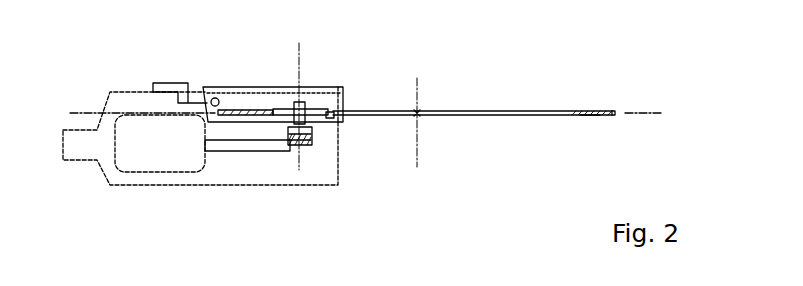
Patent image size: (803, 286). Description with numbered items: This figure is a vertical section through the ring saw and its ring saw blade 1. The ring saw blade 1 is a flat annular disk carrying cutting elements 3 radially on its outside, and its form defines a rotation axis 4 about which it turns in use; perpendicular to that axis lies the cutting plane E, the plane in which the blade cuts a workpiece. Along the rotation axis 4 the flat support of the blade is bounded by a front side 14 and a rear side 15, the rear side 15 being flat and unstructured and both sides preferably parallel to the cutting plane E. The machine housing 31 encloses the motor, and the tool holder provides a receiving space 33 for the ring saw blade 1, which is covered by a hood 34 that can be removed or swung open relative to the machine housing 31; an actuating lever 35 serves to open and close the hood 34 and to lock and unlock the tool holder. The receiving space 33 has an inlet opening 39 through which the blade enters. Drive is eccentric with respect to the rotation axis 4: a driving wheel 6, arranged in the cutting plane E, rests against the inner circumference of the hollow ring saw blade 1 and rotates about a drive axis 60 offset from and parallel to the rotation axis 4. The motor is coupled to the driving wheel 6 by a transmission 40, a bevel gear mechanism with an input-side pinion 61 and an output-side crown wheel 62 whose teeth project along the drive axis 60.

The ring saw blade 1 is at (182, 147).
The cutting elements 3 is at (605, 110).
The rotation axis 4 is at (417, 107).
The driving wheel 6 is at (322, 122).
The front side 14 is at (587, 117).
The rear side 15 is at (583, 108).
The machine housing 31 is at (127, 98).
The receiving space 33 is at (338, 92).
The hood 34 is at (252, 86).
The actuating lever 35 is at (170, 82).
The inlet opening 39 is at (345, 112).
The transmission 40 is at (256, 151).
The drive axis 60 is at (302, 86).
The input-side pinion 61 is at (296, 146).
The output-side crown wheel 62 is at (304, 146).
The cutting plane E is at (643, 108).